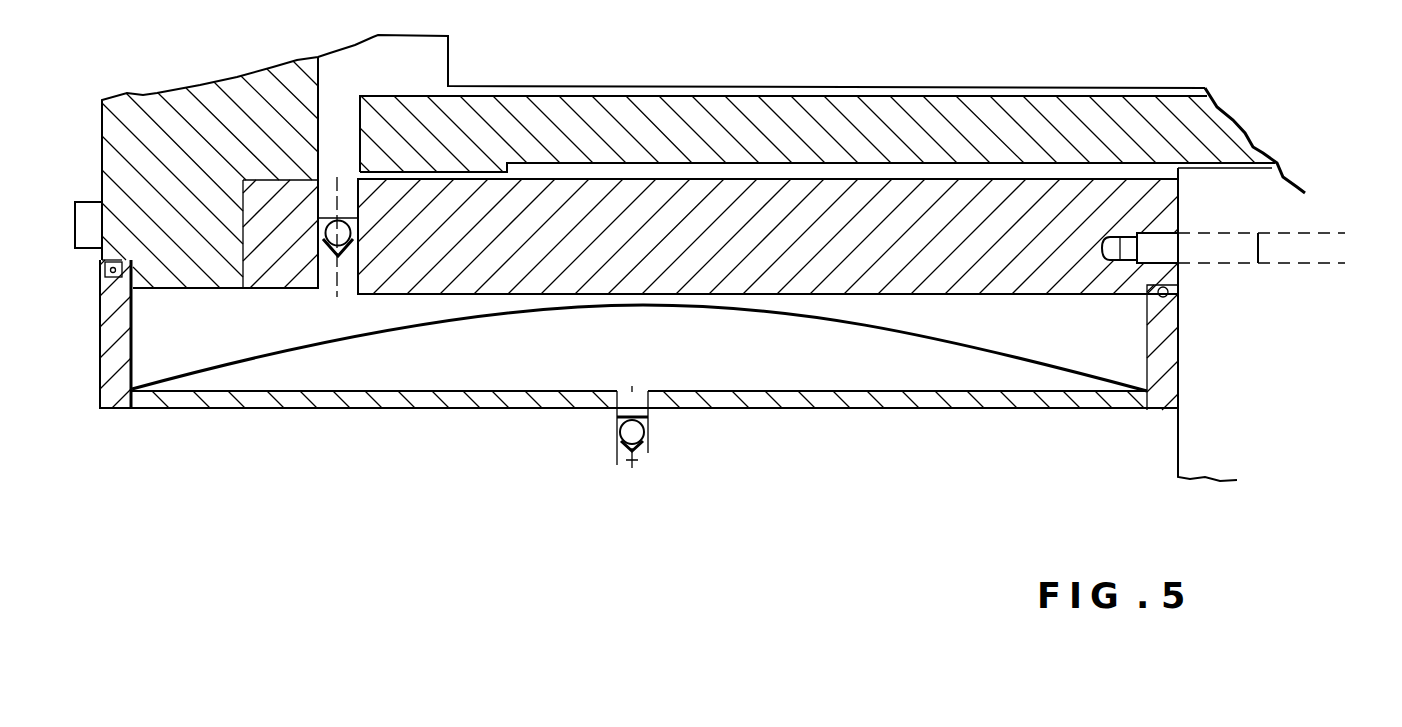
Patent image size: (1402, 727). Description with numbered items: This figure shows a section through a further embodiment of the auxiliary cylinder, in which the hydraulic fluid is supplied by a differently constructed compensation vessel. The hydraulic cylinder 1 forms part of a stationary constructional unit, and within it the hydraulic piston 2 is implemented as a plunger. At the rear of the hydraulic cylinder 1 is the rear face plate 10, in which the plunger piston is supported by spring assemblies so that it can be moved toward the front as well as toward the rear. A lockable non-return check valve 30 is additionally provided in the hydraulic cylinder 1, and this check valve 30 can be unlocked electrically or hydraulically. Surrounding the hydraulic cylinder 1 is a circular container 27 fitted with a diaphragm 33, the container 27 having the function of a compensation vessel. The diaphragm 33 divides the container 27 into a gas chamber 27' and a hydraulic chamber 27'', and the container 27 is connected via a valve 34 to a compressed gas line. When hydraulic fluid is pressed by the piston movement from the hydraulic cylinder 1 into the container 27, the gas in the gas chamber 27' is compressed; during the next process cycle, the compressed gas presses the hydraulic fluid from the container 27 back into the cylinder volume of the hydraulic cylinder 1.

The hydraulic cylinder 1 is at (878, 250).
The hydraulic piston 2 is at (827, 135).
The rear face plate 10 is at (137, 145).
The circular container 27 is at (639, 432).
The gas chamber 27' is at (800, 424).
The hydraulic chamber 27'' is at (1048, 415).
The lockable non-return check valve 30 is at (322, 221).
The diaphragm 33 is at (243, 362).
The valve 34 is at (636, 410).